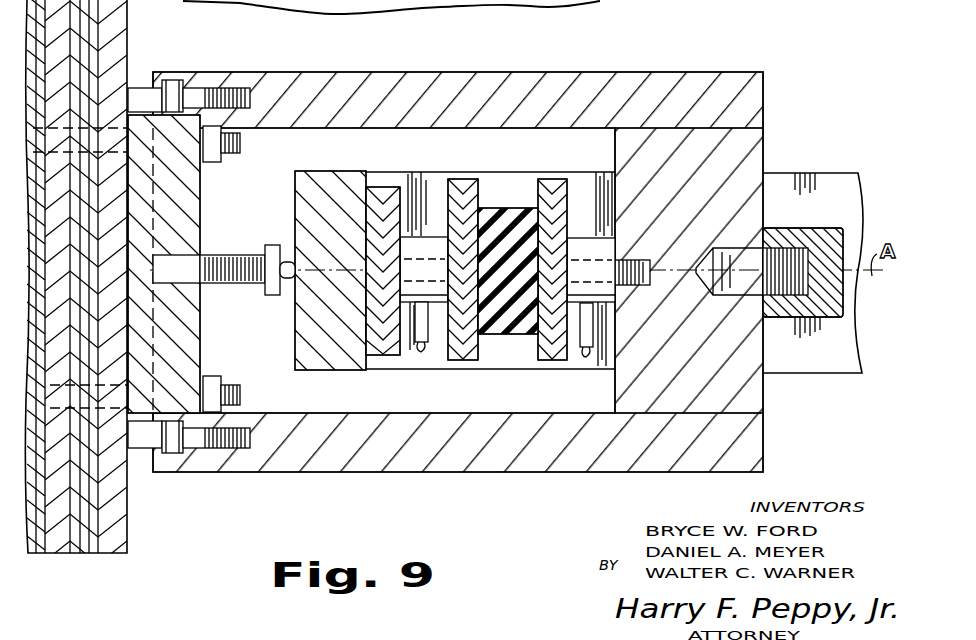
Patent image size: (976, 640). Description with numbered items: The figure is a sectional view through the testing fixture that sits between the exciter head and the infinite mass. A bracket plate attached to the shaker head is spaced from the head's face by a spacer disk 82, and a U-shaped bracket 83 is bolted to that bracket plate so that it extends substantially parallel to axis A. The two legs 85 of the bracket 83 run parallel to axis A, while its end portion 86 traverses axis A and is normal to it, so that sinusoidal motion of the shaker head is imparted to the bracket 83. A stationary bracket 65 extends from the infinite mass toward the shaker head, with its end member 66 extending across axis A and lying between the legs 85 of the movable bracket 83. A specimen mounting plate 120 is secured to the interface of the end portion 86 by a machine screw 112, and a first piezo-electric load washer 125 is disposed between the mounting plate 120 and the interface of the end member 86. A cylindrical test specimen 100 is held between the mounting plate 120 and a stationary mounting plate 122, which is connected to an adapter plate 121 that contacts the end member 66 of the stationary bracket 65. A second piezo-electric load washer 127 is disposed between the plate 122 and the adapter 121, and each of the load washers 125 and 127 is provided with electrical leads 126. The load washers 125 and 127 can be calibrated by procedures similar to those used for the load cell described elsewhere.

The stationary bracket 65 is at (838, 173).
The end member of stationary bracket 66 is at (297, 190).
The spacer disk 82 is at (170, 472).
The U-shaped bracket 83 is at (642, 68).
The legs of U-shaped bracket 85 is at (300, 72).
The end portion of U-shaped bracket 86 is at (763, 118).
The cylindrical test specimen 100 is at (506, 210).
The machine screw 112 is at (630, 287).
The specimen mounting plate 120 is at (556, 186).
The adapter plate 121 is at (382, 188).
The stationary mounting plate 122 is at (458, 187).
The first piezo-electric load washer 125 is at (598, 243).
The electrical leads 126 is at (435, 340).
The second piezo-electric load washer 127 is at (407, 303).